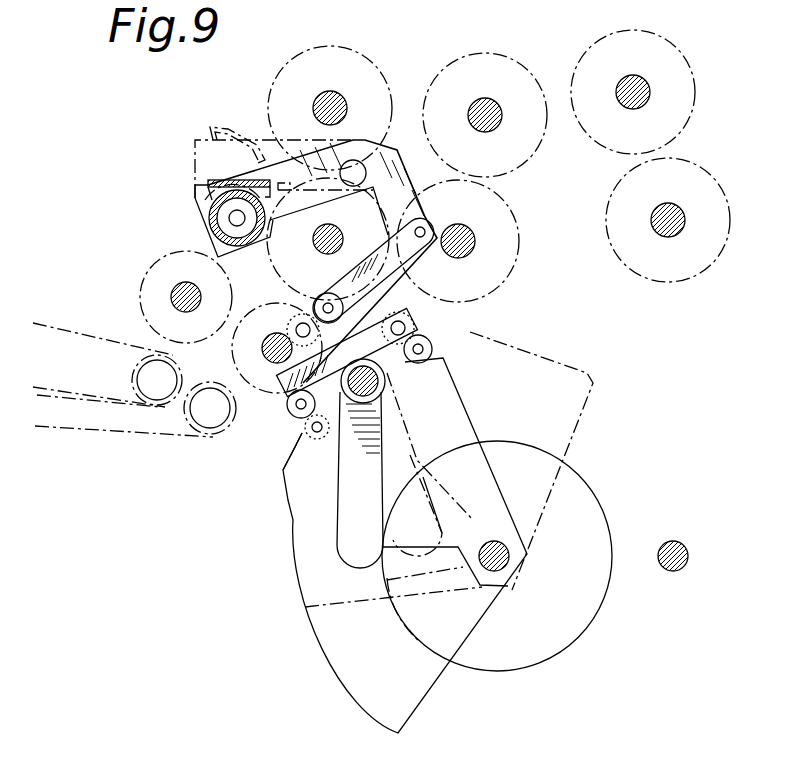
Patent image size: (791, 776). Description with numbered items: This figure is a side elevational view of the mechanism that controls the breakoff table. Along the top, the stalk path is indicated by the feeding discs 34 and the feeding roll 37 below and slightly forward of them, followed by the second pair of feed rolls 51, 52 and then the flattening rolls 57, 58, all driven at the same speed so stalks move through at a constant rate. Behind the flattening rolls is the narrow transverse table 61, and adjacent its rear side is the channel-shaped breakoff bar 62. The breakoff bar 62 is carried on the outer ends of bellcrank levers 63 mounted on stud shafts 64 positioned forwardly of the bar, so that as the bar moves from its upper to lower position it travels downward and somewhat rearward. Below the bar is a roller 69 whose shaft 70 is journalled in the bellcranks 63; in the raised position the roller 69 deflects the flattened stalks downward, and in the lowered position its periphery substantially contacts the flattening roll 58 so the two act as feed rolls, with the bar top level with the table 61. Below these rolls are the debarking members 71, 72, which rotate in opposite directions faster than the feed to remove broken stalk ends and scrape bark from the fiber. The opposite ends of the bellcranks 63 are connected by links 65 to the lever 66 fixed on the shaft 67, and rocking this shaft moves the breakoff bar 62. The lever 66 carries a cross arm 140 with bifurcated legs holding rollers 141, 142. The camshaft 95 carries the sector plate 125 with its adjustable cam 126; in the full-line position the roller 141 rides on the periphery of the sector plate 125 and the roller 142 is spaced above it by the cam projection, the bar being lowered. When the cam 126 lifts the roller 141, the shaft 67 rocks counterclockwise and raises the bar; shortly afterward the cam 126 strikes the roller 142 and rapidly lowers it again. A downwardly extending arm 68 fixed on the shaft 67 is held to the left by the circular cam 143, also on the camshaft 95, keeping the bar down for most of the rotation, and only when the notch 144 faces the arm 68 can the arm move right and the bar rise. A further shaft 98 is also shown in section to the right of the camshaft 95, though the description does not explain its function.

The feeding discs 34 is at (676, 66).
The feeding roll 37 is at (700, 182).
The upper feed roll 51 is at (510, 80).
The lower feed roll 52 is at (500, 212).
The flattening roll 57 is at (330, 62).
The flattening roll 58 is at (292, 274).
The table 61 is at (272, 134).
The breakoff bar 62 is at (210, 183).
The bellcrank levers 63 is at (382, 166).
The stud shafts 64 is at (352, 170).
The links 65 is at (398, 273).
The lever 66 is at (340, 298).
The shaft 67 is at (386, 381).
The downwardly extending arm 68 is at (346, 505).
The roller 69 is at (218, 212).
The shaft 70 is at (236, 218).
The rotary debarking member 71 is at (152, 264).
The rotary debarking member 72 is at (238, 354).
The camshaft 95 is at (498, 556).
The shaft 98 is at (690, 556).
The sector plate 125 is at (325, 648).
The cam 126 is at (288, 458).
The cross arm 140 is at (415, 328).
The roller 141 is at (434, 348).
The roller 142 is at (292, 418).
The cam 143 is at (590, 598).
The notch 144 is at (460, 622).